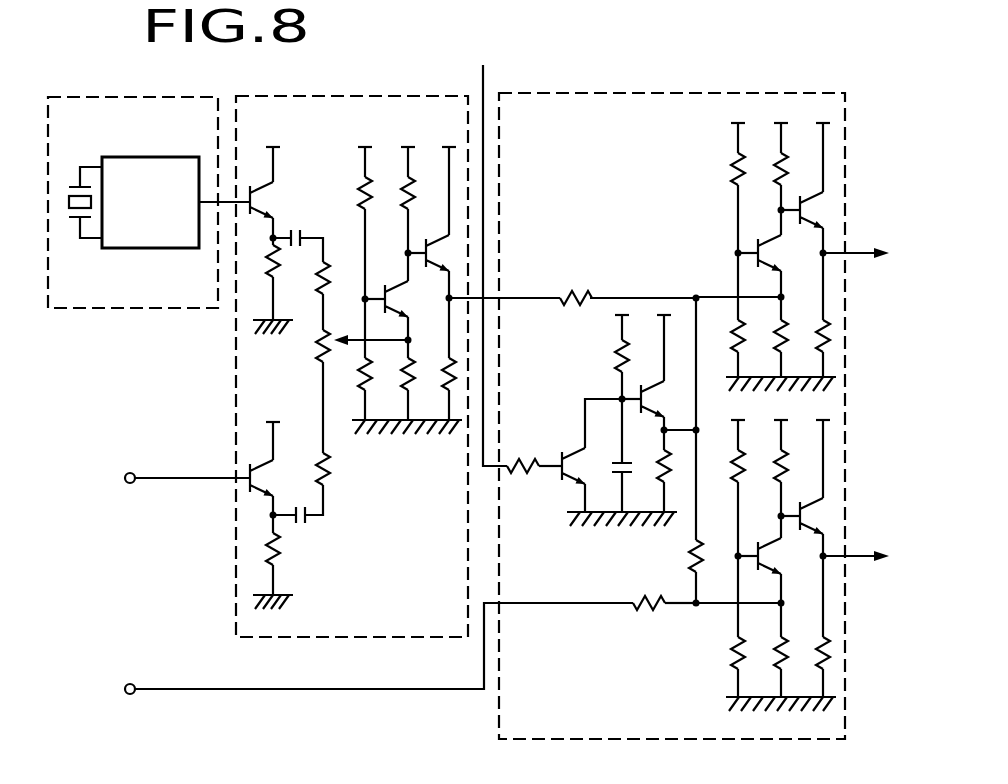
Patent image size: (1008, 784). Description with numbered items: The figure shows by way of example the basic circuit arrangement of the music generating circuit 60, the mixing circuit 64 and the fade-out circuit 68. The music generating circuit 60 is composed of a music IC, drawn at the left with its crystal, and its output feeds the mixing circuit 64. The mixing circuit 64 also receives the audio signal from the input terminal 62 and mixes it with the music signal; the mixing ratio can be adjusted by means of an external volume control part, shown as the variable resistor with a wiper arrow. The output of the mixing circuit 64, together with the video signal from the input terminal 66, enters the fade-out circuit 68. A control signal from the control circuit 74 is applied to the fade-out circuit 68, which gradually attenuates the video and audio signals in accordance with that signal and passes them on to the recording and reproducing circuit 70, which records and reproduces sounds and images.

The music generating circuit 60 is at (62, 95).
The input terminal 62 is at (133, 472).
The mixing circuit 64 is at (397, 94).
The input terminal 66 is at (133, 683).
The fade-out circuit 68 is at (499, 725).
The recording and reproducing circuit 70 is at (861, 420).
The control circuit 74 is at (481, 254).